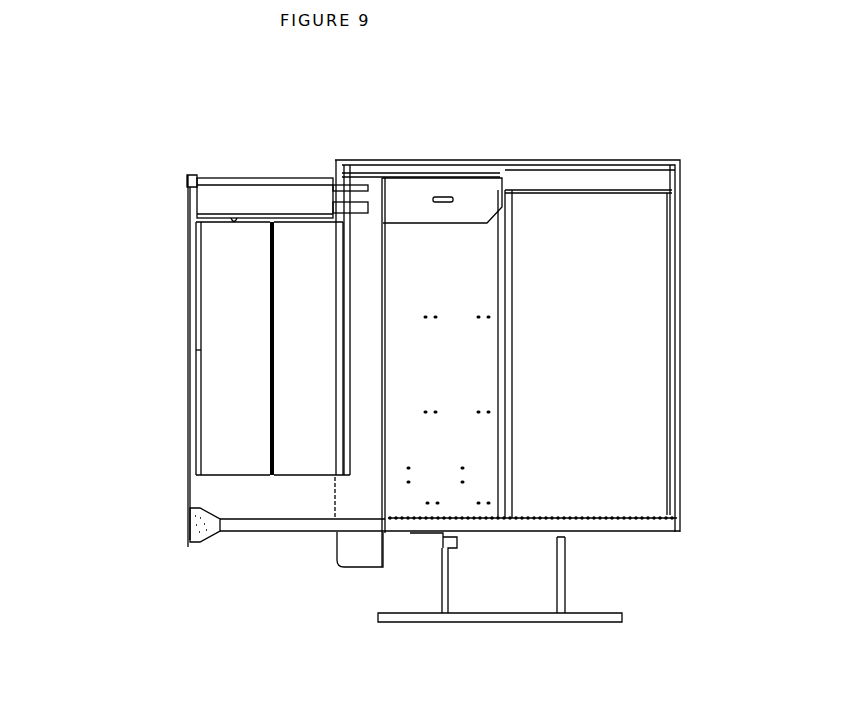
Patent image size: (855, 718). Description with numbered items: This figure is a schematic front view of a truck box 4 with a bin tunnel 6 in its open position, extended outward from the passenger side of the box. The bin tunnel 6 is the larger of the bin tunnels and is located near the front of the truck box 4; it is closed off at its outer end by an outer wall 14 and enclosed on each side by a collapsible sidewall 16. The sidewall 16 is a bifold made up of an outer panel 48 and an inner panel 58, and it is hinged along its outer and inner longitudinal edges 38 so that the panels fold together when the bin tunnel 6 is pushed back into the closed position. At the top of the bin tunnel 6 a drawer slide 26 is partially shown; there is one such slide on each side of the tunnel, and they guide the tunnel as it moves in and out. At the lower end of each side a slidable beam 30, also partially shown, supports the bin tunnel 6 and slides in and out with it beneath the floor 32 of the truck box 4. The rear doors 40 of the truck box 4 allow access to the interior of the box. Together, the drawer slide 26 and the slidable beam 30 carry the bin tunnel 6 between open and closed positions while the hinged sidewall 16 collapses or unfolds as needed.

The truck box 4 is at (560, 163).
The bin tunnel 6 is at (217, 352).
The outer wall 14 is at (187, 250).
The sidewall 16 is at (227, 428).
The drawer slide 26 is at (282, 197).
The slidable beam 30 is at (320, 535).
The floor 32 is at (657, 515).
The longitudinal edges 38 is at (200, 352).
The rear doors 40 is at (463, 435).
The outer panel 48 is at (218, 297).
The inner panel 58 is at (305, 382).